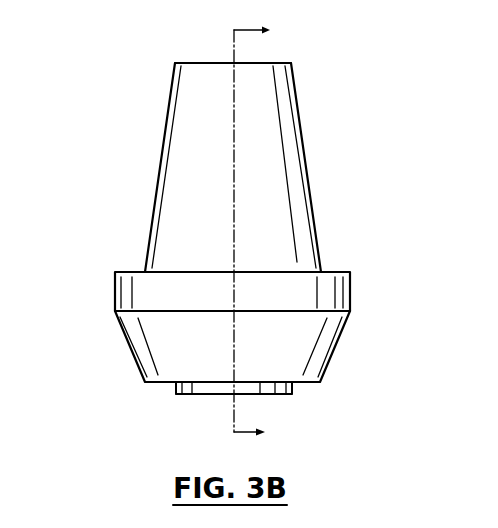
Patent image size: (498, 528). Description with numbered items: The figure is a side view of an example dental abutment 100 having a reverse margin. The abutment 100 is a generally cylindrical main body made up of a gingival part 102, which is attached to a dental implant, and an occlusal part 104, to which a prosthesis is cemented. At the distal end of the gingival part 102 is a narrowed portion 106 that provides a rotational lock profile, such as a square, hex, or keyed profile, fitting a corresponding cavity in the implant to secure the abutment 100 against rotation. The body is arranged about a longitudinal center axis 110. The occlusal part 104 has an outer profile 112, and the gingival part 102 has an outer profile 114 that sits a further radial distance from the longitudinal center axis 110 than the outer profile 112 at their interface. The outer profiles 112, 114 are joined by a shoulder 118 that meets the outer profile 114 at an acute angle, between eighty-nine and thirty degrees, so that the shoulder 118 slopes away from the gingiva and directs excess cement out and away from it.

The abutment 100 is at (245, 231).
The gingival part 102 is at (298, 337).
The occlusal part 104 is at (288, 164).
The narrowed portion 106 is at (280, 393).
The longitudinal center axis 110 is at (232, 401).
The outer profile 112 is at (323, 249).
The outer profile 114 is at (352, 288).
The shoulder 118 is at (126, 256).